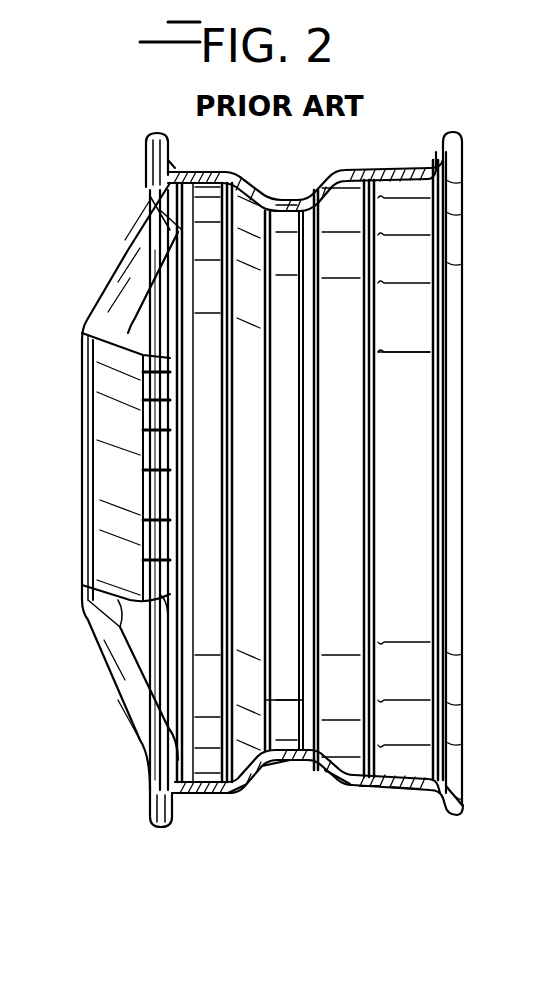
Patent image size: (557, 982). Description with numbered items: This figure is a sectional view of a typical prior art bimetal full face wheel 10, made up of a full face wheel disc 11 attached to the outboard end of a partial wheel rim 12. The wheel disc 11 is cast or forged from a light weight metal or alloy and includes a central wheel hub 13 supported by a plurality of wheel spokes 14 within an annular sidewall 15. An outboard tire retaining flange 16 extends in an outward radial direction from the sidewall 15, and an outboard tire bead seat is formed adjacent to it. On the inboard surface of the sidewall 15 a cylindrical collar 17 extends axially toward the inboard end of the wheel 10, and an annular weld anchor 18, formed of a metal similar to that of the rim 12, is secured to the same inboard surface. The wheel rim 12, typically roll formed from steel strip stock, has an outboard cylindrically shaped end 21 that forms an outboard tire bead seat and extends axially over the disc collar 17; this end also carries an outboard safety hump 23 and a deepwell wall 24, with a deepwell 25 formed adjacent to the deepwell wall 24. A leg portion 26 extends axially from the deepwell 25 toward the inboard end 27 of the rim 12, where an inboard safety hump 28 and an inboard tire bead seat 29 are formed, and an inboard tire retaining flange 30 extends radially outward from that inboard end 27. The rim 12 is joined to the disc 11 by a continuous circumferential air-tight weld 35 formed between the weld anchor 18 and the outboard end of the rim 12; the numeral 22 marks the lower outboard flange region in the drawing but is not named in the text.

The bimetal full face wheel 10 is at (408, 112).
The full face wheel disc 11 is at (70, 523).
The partial wheel rim 12 is at (418, 150).
The central wheel hub 13 is at (105, 414).
The wheel spokes 14 is at (115, 262).
The annular sidewall 15 is at (155, 205).
The outboard tire retaining flange 16 is at (146, 160).
The cylindrical collar 17 is at (220, 176).
The annular weld anchor 18 is at (168, 170).
The outboard cylindrically shaped end 21 is at (198, 800).
The outboard flange 22 is at (178, 805).
The outboard safety hump 23 is at (240, 795).
The deepwell wall 24 is at (262, 775).
The deepwell 25 is at (282, 745).
The leg portion 26 is at (340, 787).
The inboard end 27 is at (418, 442).
The inboard safety hump 28 is at (370, 790).
The inboard tire bead seat 29 is at (402, 790).
The inboard tire retaining flange 30 is at (465, 790).
The continuous circumferential air-tight weld 35 is at (172, 175).